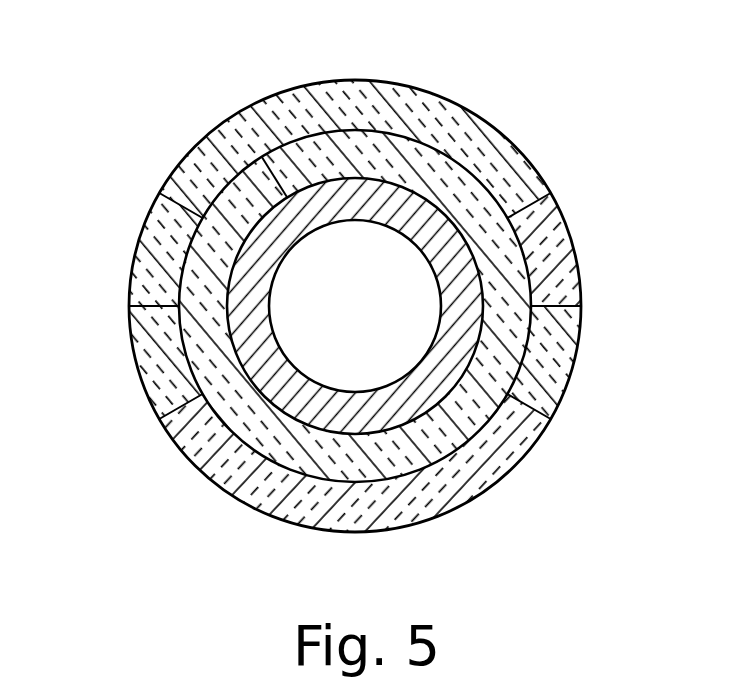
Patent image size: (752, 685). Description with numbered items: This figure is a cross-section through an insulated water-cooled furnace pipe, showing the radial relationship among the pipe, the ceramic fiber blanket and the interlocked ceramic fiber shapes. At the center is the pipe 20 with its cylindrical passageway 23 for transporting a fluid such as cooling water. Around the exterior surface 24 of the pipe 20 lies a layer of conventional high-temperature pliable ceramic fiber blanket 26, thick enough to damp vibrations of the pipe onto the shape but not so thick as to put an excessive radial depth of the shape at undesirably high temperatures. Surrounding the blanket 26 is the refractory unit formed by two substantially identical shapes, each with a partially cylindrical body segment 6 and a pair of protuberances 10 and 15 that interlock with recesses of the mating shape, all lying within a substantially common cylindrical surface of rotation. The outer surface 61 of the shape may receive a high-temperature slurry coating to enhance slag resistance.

The body segment 6 is at (427, 83).
The outer surface 61 is at (307, 84).
The protuberance 10 is at (563, 322).
The protuberance 15 is at (157, 323).
The pipe 20 is at (407, 275).
The cylindrical passageway 23 is at (455, 282).
The exterior surface 24 is at (482, 364).
The ceramic fiber blanket 26 is at (346, 279).